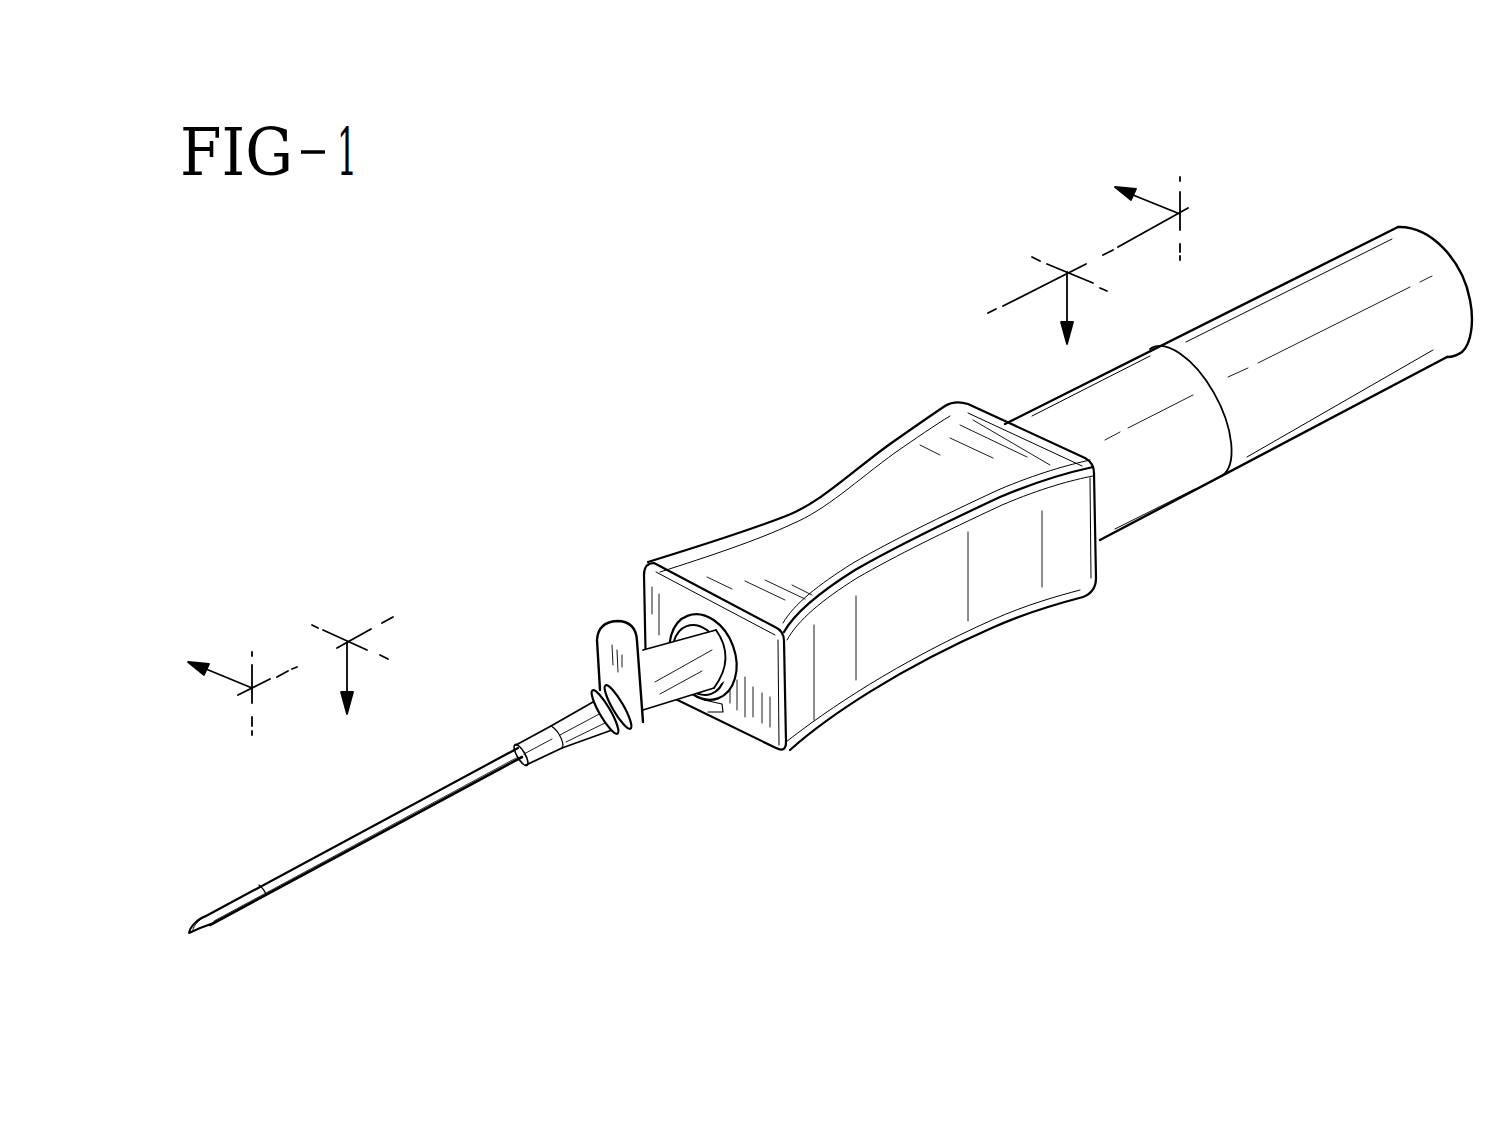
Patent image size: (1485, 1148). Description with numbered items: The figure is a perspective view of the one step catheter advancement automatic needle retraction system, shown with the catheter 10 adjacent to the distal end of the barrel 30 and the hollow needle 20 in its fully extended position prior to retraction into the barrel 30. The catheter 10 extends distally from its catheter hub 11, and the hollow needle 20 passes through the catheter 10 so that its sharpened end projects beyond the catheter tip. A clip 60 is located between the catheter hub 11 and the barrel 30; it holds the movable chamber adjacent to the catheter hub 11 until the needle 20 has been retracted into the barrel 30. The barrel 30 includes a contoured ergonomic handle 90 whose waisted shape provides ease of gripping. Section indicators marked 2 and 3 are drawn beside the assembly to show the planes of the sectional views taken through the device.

The catheter 10 is at (394, 805).
The catheter hub 11 is at (591, 742).
The hollow needle 20 is at (209, 918).
The barrel 30 is at (868, 505).
The clip 60 is at (696, 700).
The contoured ergonomic handle 90 is at (921, 621).
The section line 2- 2 is at (699, 456).
The section line 3- 3 is at (709, 471).